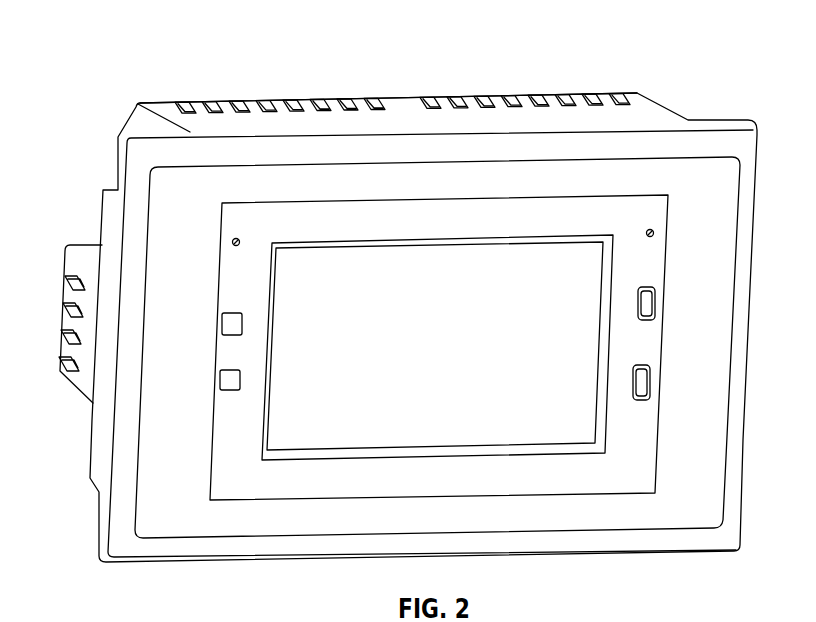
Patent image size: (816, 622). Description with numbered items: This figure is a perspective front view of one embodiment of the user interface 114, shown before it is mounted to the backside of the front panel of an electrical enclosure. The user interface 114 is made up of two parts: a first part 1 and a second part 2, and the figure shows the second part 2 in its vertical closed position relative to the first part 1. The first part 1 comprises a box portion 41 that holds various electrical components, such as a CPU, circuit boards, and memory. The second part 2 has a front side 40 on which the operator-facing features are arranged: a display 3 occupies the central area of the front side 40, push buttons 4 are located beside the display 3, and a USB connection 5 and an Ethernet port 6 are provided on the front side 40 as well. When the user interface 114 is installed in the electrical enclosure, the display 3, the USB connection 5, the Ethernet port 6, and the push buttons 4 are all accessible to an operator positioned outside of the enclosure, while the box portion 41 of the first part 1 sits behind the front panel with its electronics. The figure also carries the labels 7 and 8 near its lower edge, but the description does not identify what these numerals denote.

The first part 1 is at (663, 140).
The second part 2 is at (173, 294).
The display 3 is at (370, 417).
The push buttons 4 is at (237, 381).
The USB connection 5 is at (642, 305).
The Ethernet port 6 is at (640, 382).
The bottom connector region 7 is at (533, 610).
The bottom connector region 8 is at (603, 614).
The front side 40 is at (235, 462).
The box portion 41 is at (220, 111).
The user interface 114 is at (337, 80).